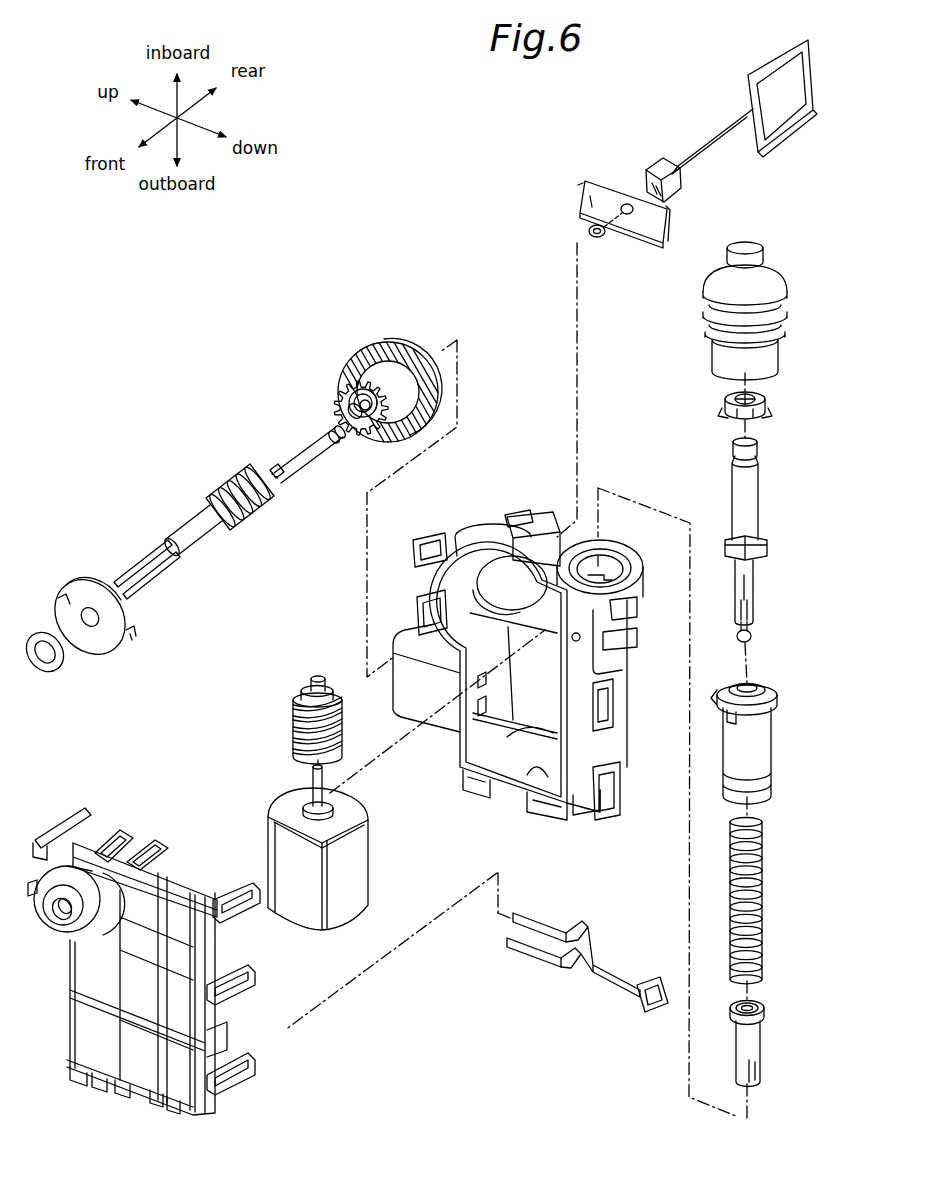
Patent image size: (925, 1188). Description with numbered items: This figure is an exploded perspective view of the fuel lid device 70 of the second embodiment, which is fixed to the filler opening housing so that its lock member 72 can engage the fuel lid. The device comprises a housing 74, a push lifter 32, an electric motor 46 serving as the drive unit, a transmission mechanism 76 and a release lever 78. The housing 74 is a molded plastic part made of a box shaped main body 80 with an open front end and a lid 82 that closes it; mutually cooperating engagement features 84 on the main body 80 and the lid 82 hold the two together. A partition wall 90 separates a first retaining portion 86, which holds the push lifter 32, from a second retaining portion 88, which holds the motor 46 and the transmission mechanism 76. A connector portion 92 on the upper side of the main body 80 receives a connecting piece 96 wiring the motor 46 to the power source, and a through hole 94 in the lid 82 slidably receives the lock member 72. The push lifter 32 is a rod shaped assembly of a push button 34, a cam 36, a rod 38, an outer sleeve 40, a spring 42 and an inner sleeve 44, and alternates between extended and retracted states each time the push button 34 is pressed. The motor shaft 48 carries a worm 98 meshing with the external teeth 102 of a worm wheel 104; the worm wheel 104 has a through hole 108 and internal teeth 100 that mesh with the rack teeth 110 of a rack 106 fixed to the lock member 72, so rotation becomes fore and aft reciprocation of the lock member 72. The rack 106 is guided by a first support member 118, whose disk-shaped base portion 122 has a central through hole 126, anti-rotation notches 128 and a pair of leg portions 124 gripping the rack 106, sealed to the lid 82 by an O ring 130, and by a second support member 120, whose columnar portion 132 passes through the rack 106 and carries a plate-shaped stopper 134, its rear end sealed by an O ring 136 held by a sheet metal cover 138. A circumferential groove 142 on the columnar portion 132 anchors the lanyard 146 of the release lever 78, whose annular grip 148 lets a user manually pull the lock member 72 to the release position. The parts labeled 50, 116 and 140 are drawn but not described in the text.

The push lifter 32 is at (800, 250).
The push button 34 is at (780, 298).
The cam 36 is at (766, 406).
The rod 38 is at (760, 506).
The outer sleeve 40 is at (772, 743).
The spring 42 is at (763, 899).
The inner sleeve 44 is at (761, 1050).
The electric motor 46 is at (372, 848).
The motor shaft 48 is at (312, 776).
The motor housing 50 is at (345, 908).
The fuel lid device 70 is at (375, 155).
The lock member 72 is at (199, 527).
The housing 74 is at (395, 1033).
The transmission mechanism 76 is at (265, 380).
The release lever 78 is at (730, 83).
The main body 80 is at (517, 718).
The lid 82 is at (218, 961).
The engagement features 84 is at (430, 540).
The first retaining portion 86 is at (604, 556).
The second retaining portion 88 is at (505, 720).
The partition wall 90 is at (525, 792).
The connector portion 92 is at (398, 682).
The through hole 94 is at (60, 923).
The connecting piece 96 is at (537, 960).
The worm 98 is at (303, 745).
The internal teeth 100 is at (363, 443).
The external teeth 102 is at (367, 357).
The worm wheel 104 is at (412, 343).
The rack 106 is at (257, 522).
The through hole 108 is at (352, 387).
The rack teeth 110 is at (257, 467).
The bearing boss 116 is at (467, 530).
The first support member 118 is at (105, 565).
The second support member 120 is at (302, 479).
The base portion 122 is at (82, 582).
The leg portions 124 is at (157, 558).
The through hole 126 is at (100, 628).
The notches 128 is at (62, 603).
The O ring 130 is at (52, 678).
The columnar portion 132 is at (318, 453).
The stopper 134 is at (277, 467).
The O ring 136 is at (589, 231).
The cover 138 is at (624, 203).
The plate hole 140 is at (628, 215).
The circumferential groove 142 is at (330, 427).
The lanyard 146 is at (697, 150).
The annular grip 148 is at (787, 137).